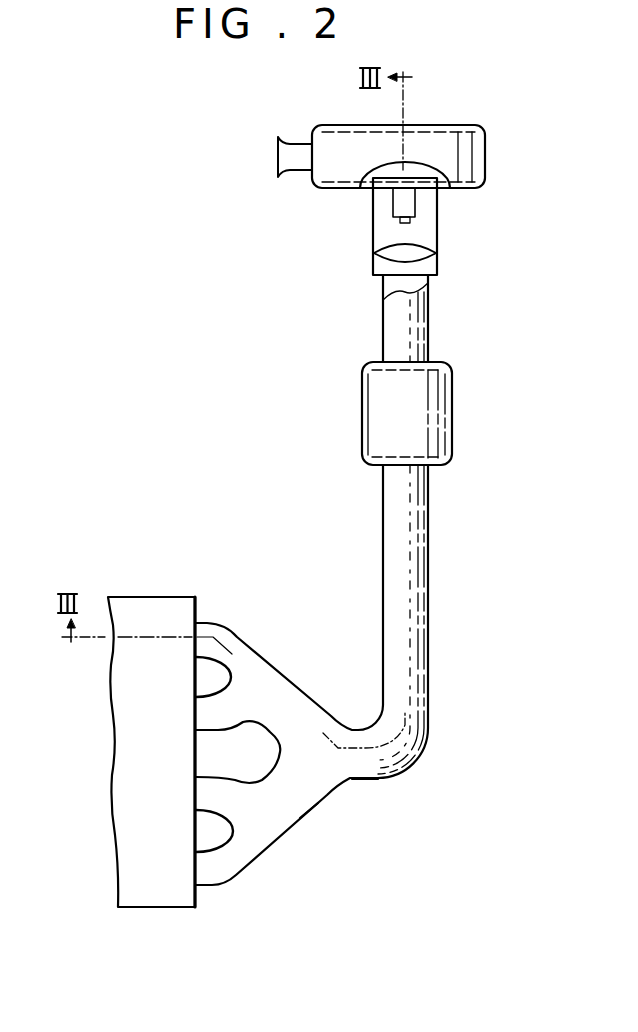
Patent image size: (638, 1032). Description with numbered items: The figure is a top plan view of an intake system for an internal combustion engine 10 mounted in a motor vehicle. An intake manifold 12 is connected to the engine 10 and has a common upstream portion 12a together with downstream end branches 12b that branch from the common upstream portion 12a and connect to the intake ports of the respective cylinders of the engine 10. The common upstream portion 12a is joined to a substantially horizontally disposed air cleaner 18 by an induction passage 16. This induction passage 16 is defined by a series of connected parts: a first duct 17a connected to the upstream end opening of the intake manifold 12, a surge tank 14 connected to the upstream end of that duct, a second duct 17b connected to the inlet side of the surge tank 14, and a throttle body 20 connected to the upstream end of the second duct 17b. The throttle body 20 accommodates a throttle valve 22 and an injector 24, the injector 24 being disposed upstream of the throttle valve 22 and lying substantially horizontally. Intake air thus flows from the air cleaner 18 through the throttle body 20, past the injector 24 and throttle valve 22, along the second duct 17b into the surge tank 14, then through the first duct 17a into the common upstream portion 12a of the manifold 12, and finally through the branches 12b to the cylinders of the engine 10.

The internal combustion engine 10 is at (173, 598).
The intake manifold 12 is at (283, 663).
The common upstream portion 12a is at (340, 782).
The downstream end branches 12b is at (287, 832).
The surge tank 14 is at (362, 403).
The induction passage 16 is at (392, 289).
The first duct 17a is at (384, 557).
The second duct 17b is at (384, 315).
The air cleaner 18 is at (487, 150).
The throttle body 20 is at (373, 226).
The throttle valve 22 is at (430, 243).
The injector 24 is at (415, 200).